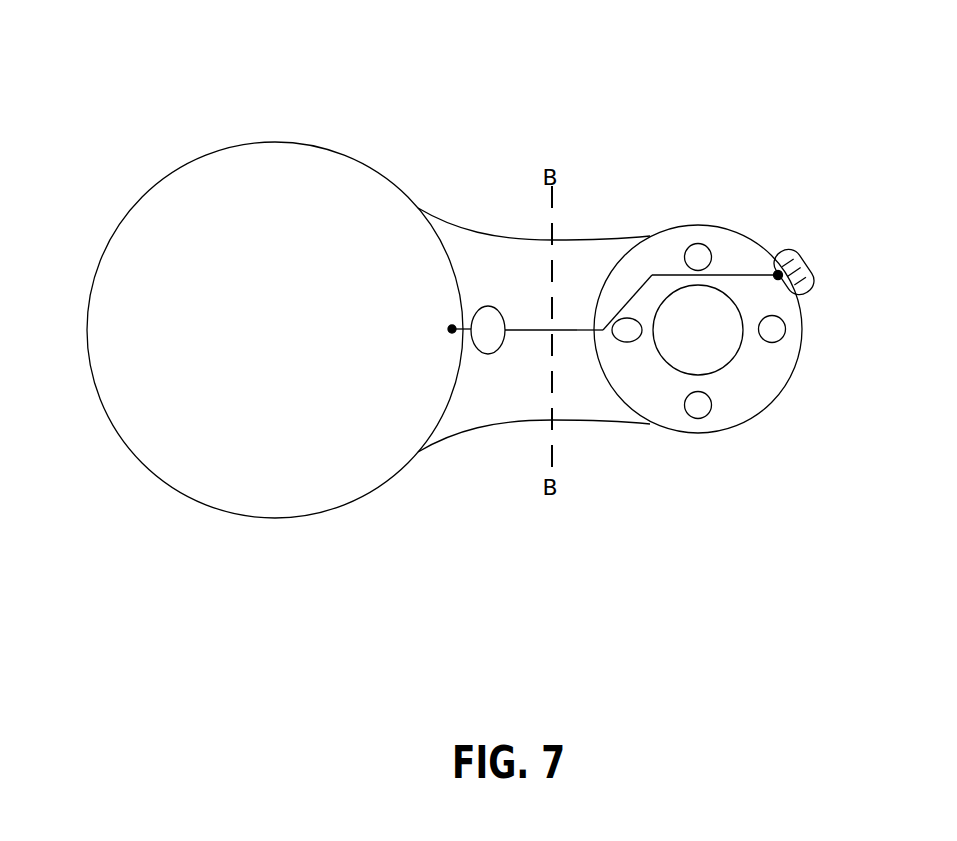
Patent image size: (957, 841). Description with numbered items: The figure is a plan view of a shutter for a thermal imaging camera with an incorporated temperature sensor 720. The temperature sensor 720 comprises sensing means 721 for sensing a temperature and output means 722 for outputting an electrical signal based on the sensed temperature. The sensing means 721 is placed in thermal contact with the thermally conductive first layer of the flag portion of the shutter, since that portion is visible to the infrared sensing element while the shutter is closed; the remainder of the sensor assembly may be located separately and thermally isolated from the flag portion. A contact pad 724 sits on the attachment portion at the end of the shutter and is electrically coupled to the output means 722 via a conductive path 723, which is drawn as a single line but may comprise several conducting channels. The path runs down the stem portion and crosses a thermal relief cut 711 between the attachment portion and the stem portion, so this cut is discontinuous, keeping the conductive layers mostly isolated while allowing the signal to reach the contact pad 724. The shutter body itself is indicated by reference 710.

The first disk portion 710 is at (458, 395).
The thermal relief cut 711 is at (602, 385).
The temperature sensor 720 is at (492, 321).
The sensing means 721 is at (441, 329).
The output means 722 is at (508, 325).
The conductive path 723 is at (577, 321).
The contact pad 724 is at (828, 270).